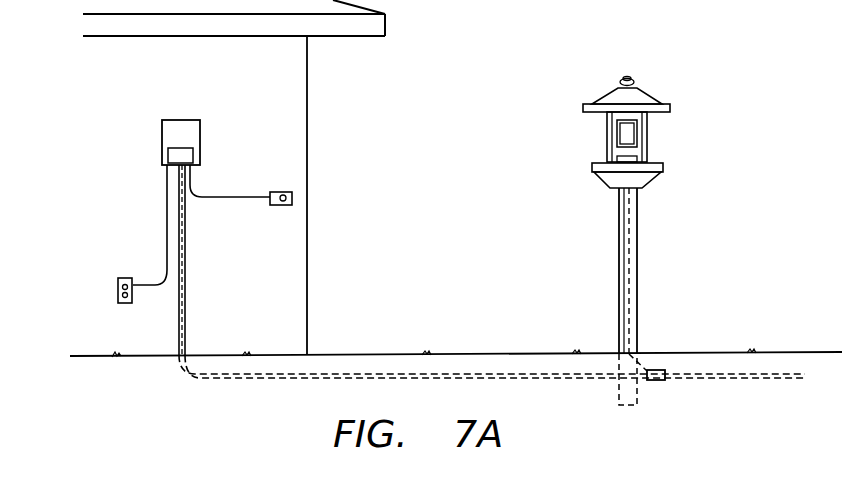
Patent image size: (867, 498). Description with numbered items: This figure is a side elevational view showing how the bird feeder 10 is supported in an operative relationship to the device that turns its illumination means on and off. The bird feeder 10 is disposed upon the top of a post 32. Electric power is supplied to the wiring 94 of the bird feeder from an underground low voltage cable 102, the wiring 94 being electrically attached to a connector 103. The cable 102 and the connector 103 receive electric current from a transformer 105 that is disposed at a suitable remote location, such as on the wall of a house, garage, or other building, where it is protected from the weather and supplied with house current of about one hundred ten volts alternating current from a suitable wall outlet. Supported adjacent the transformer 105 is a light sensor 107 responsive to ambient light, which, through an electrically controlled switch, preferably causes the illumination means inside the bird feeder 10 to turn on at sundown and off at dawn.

The bird feeder 10 is at (703, 93).
The post 32 is at (637, 230).
The wiring 94 is at (628, 258).
The underground low voltage cable 102 is at (338, 380).
The connector 103 is at (652, 368).
The transformer 105 is at (193, 137).
The light sensor 107 is at (283, 192).